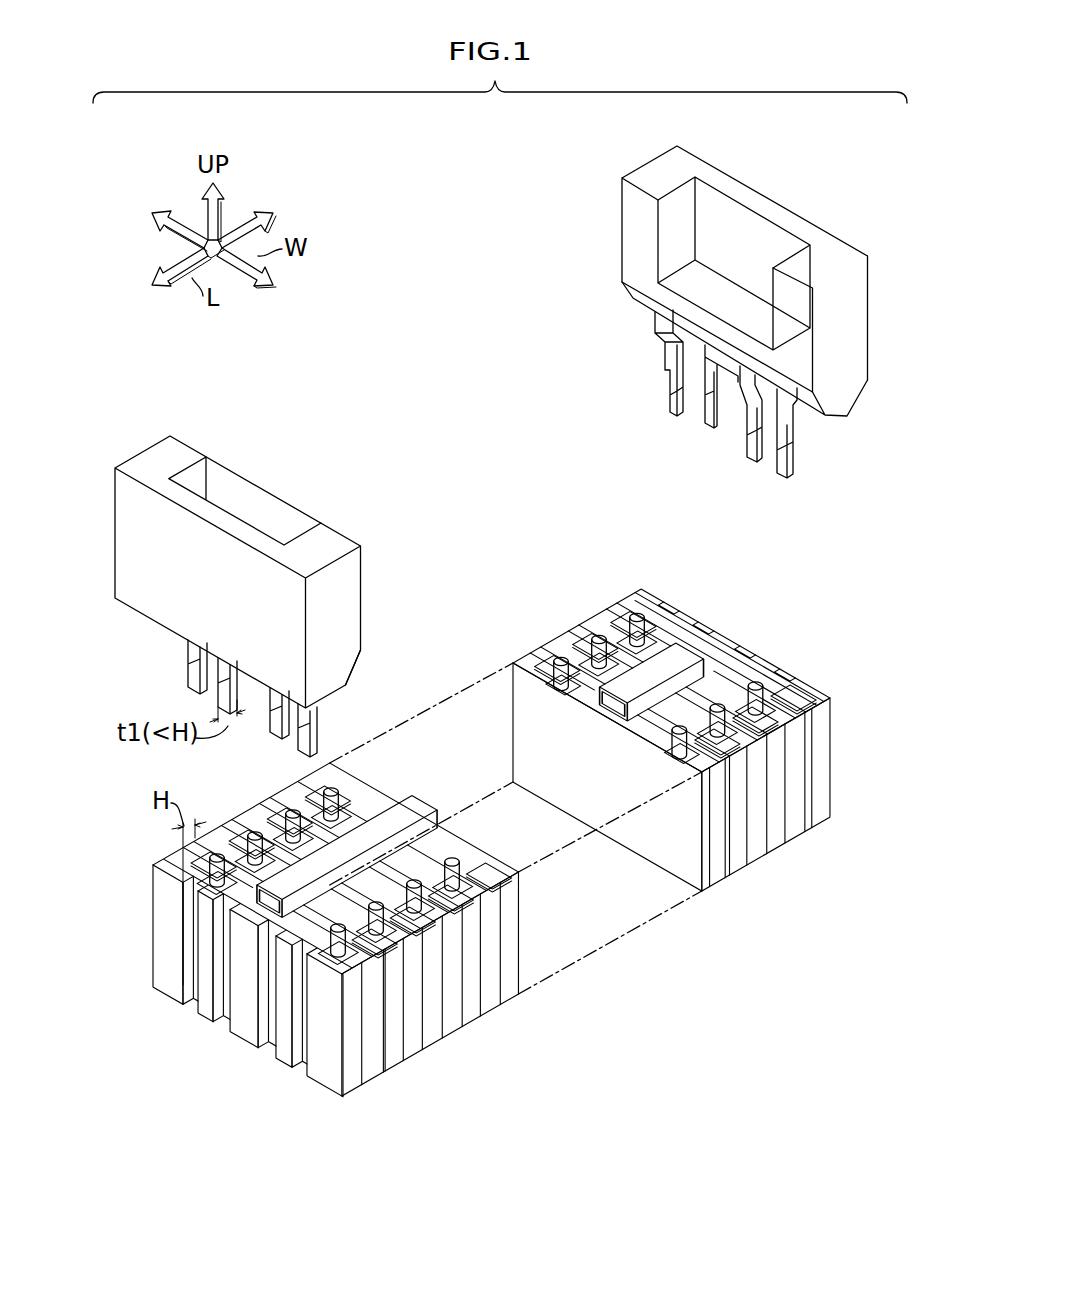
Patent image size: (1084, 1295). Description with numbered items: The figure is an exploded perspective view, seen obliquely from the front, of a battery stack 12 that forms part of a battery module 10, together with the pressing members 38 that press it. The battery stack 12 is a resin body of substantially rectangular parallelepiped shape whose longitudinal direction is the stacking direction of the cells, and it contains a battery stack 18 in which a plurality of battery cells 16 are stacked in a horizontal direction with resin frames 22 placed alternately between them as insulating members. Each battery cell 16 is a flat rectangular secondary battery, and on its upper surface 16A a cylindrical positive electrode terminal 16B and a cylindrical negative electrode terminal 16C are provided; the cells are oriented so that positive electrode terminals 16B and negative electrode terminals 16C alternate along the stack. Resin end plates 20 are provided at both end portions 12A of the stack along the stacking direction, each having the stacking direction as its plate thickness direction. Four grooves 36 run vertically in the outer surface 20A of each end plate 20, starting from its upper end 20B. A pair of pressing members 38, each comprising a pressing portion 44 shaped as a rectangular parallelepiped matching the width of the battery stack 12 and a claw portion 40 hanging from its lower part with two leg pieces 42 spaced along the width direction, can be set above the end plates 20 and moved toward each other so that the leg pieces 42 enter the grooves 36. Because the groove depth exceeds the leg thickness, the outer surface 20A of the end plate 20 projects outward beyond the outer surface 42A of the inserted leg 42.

The battery module 10 is at (498, 853).
The battery stack 12 is at (498, 853).
The end portion 12A is at (353, 1082).
The battery cell 16 is at (452, 1022).
The upper surface 16A is at (750, 655).
The positive electrode terminal 16B is at (637, 610).
The negative electrode terminal 16C is at (593, 625).
The battery stack 18 is at (715, 902).
The end plate 20 is at (498, 853).
The outer surface 20A is at (205, 956).
The upper end 20B is at (168, 934).
The resin frame 22 is at (397, 1060).
The groove 36 is at (346, 857).
The pressing member 38 is at (515, 474).
The claw portion 40 is at (475, 556).
The leg piece 42 is at (700, 418).
The outer surface 42A is at (207, 721).
The pressing portion 44 is at (876, 304).